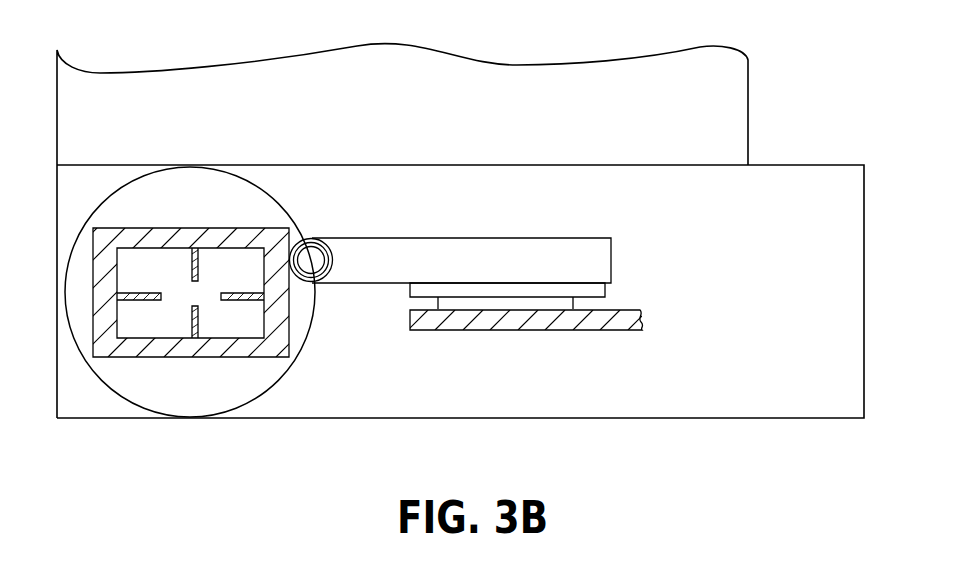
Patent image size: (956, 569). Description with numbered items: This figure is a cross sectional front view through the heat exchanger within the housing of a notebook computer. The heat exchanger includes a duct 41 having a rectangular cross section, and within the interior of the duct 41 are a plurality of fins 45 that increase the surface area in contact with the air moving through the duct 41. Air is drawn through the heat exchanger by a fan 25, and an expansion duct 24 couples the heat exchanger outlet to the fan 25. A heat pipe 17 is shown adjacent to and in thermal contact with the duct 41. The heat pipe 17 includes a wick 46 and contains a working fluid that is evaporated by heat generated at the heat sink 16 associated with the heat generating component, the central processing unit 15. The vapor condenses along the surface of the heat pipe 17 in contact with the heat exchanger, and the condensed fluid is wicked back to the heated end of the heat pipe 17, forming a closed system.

The central processing unit 15 is at (574, 305).
The heat sink 16 is at (605, 287).
The heat pipe 17 is at (425, 238).
The expansion duct 24 is at (197, 183).
The fan 25 is at (272, 193).
The duct 41 is at (289, 297).
The fins 45 is at (247, 292).
The wick 46 is at (321, 240).